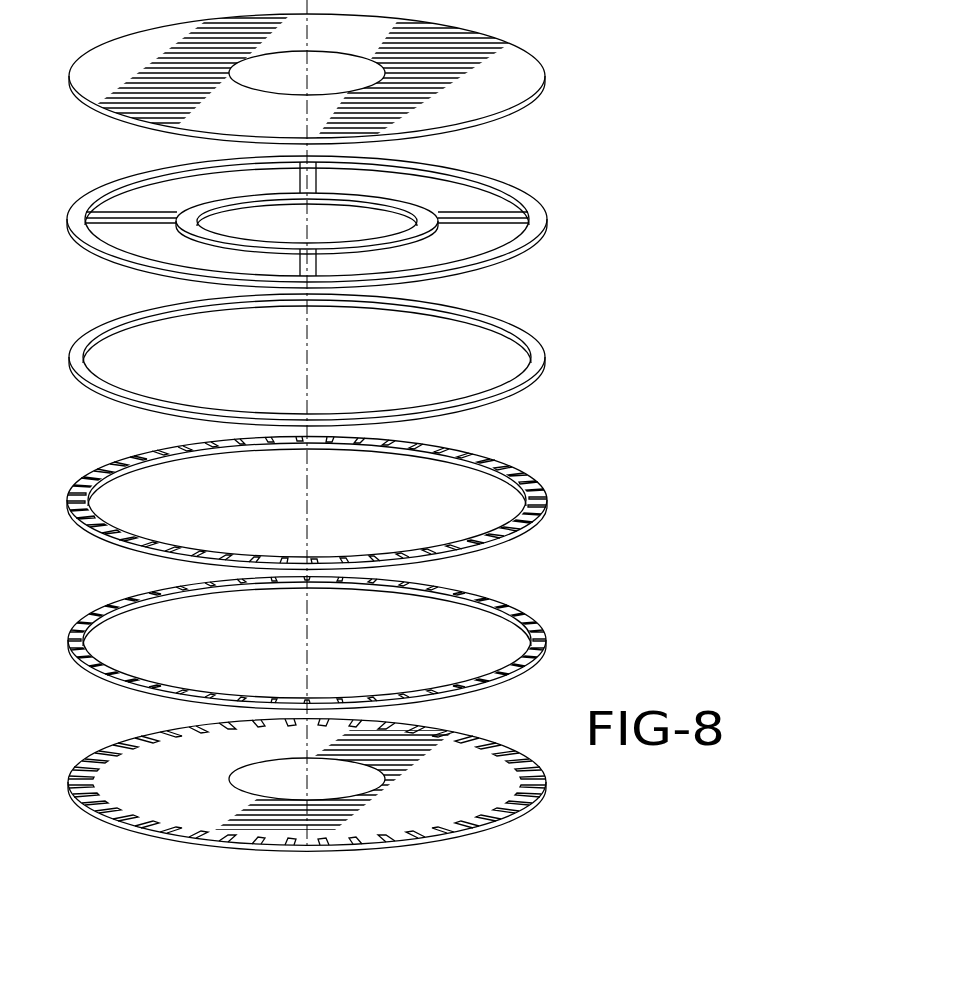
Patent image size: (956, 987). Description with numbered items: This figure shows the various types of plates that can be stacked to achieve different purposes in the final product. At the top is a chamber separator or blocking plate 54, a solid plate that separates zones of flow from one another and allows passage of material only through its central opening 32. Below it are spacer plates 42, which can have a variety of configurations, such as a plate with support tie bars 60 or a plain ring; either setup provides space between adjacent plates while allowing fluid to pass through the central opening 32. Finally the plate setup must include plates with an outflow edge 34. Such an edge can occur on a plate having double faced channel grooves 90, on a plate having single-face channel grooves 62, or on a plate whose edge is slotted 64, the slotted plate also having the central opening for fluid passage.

The central opening 32 is at (347, 62).
The blocking plate 54 is at (510, 68).
The spacer plate 42 is at (355, 288).
The support tie bars 60 is at (480, 222).
The double faced channel grooves 90 is at (505, 464).
The outflow edge 34 is at (362, 714).
The single-face channel grooves 62 is at (336, 698).
The slotted 64 is at (386, 832).